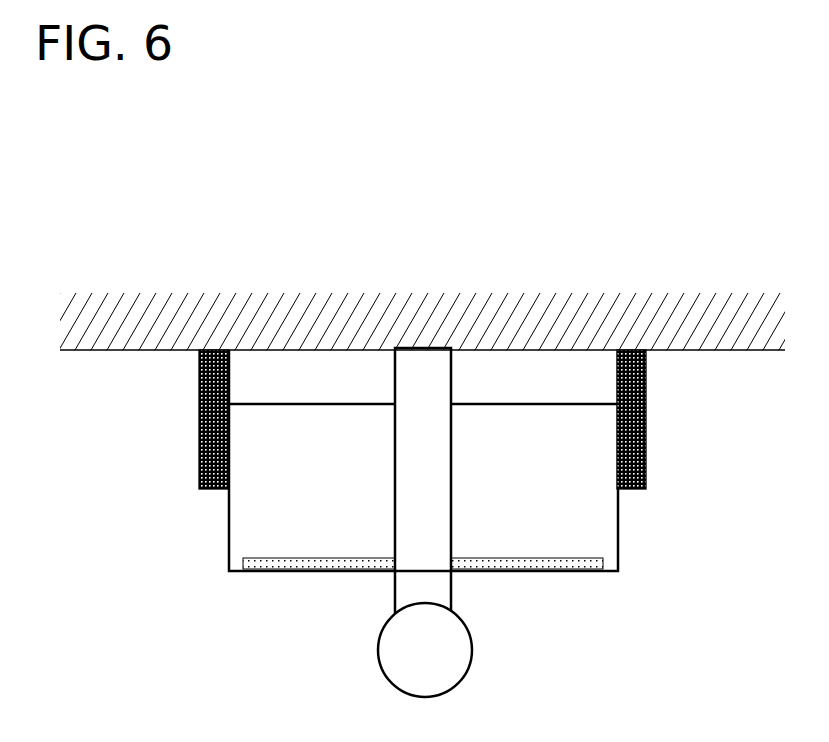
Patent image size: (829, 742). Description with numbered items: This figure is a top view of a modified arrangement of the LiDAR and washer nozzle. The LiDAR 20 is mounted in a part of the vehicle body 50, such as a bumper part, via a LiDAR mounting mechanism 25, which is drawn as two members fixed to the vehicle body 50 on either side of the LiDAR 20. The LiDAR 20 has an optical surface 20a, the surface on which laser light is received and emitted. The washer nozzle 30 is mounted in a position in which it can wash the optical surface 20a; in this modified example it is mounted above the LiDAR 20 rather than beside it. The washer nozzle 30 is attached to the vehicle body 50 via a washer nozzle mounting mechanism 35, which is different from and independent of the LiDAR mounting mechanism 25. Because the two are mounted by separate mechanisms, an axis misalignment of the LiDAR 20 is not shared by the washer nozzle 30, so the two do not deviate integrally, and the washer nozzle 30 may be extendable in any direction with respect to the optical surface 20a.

The vehicle body 50 is at (557, 315).
The LiDAR 20 is at (618, 532).
The optical surface 20a is at (565, 563).
The LiDAR mounting mechanism 25 is at (229, 372).
The washer nozzle mounting mechanism 35 is at (395, 597).
The washer nozzle 30 is at (467, 673).